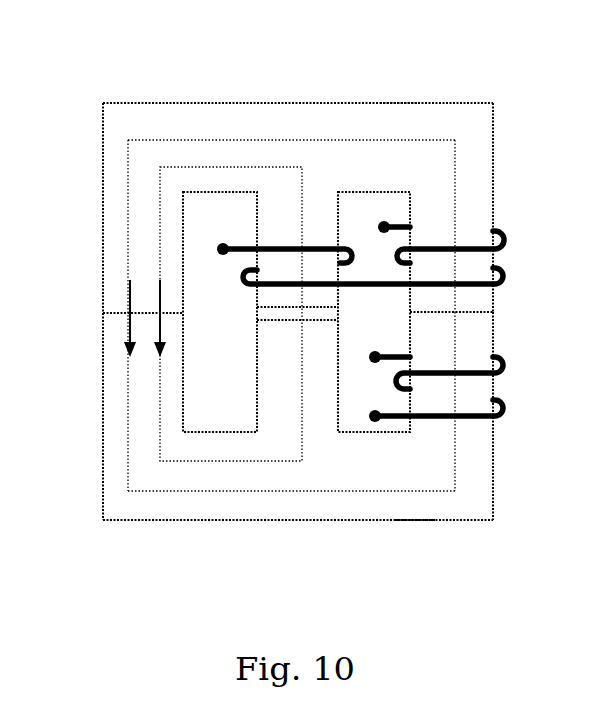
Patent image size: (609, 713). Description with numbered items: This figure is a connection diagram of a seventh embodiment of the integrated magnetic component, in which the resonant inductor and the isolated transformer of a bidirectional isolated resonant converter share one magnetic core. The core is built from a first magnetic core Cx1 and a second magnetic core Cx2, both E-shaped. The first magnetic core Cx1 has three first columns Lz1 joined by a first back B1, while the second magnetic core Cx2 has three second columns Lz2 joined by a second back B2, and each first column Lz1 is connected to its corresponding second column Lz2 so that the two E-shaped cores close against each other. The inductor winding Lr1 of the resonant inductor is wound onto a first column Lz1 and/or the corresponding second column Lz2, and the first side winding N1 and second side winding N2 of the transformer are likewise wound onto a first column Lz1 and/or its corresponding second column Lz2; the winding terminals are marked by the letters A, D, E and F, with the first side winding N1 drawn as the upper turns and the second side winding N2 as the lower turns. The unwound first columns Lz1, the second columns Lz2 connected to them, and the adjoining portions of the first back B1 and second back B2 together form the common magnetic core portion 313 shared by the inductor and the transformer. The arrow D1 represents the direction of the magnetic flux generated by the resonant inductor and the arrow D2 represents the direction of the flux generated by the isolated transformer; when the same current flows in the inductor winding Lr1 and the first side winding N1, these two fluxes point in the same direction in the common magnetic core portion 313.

The common magnetic core portion 313 is at (87, 522).
The first back B1 is at (423, 103).
The second back B2 is at (365, 520).
The first magnetic core Cx1 is at (392, 80).
The second magnetic core Cx2 is at (411, 547).
The first columns Lz1 is at (493, 205).
The second columns Lz2 is at (493, 445).
The arrow representing direction of magnetic flux generated by the resonant inductor D1 is at (160, 280).
The arrow representing direction of magnetic flux generated by the isolated transfor D2 is at (128, 347).
The first side winding N1 is at (384, 275).
The second side winding N2 is at (455, 389).
The terminal A is at (284, 239).
The terminal D is at (381, 219).
The inductor winding Lr1 is at (243, 283).
The terminal E is at (377, 359).
The terminal F is at (424, 417).